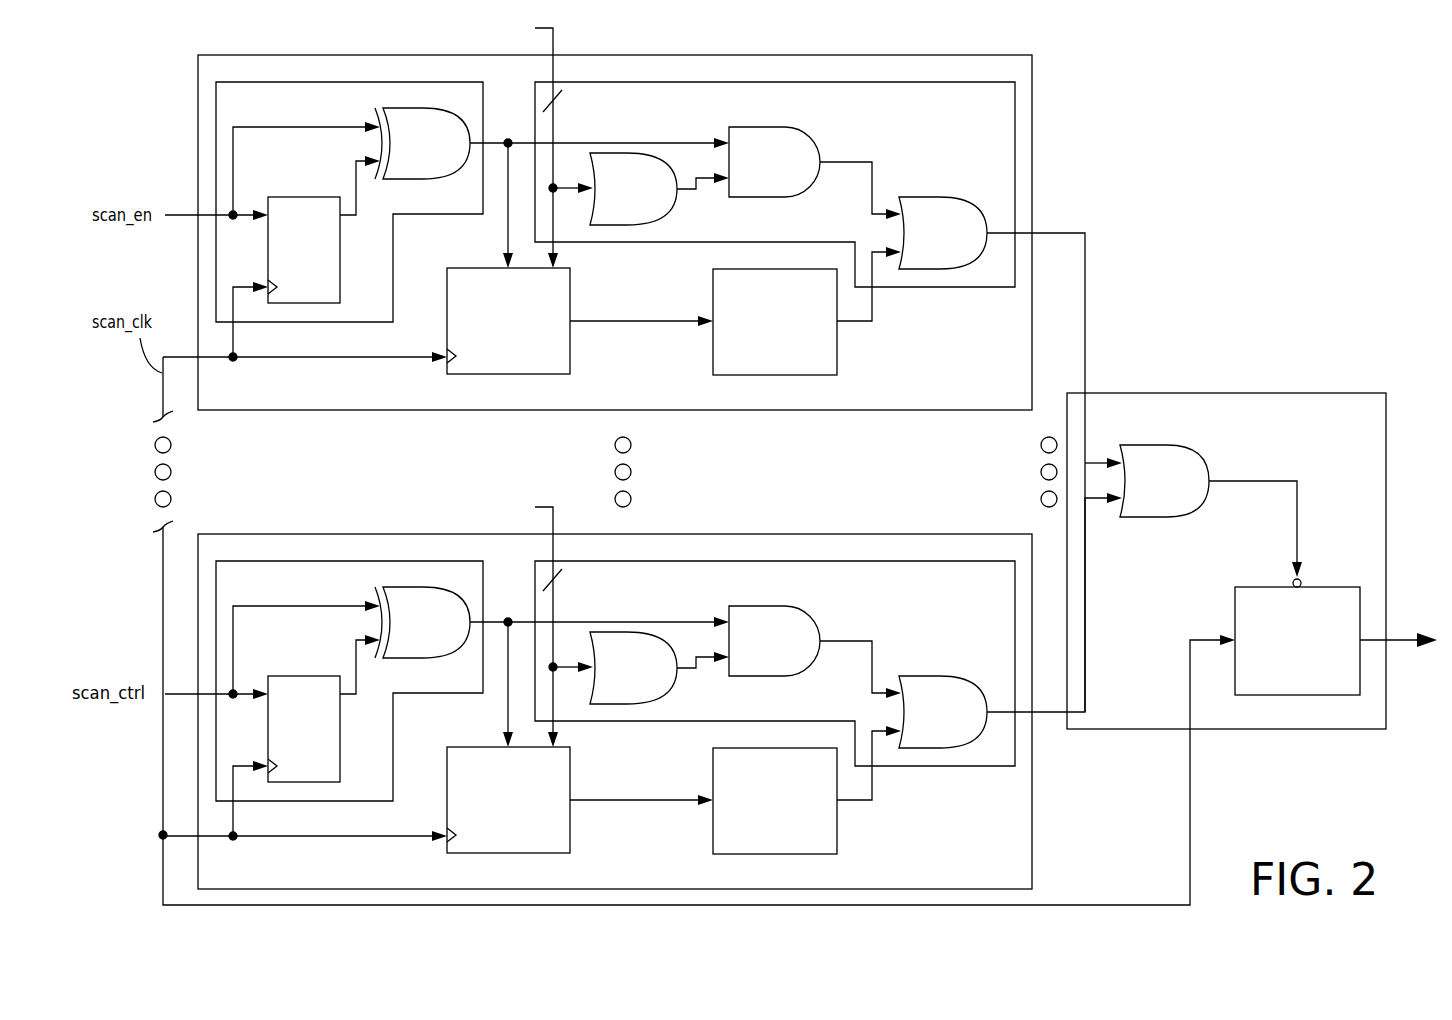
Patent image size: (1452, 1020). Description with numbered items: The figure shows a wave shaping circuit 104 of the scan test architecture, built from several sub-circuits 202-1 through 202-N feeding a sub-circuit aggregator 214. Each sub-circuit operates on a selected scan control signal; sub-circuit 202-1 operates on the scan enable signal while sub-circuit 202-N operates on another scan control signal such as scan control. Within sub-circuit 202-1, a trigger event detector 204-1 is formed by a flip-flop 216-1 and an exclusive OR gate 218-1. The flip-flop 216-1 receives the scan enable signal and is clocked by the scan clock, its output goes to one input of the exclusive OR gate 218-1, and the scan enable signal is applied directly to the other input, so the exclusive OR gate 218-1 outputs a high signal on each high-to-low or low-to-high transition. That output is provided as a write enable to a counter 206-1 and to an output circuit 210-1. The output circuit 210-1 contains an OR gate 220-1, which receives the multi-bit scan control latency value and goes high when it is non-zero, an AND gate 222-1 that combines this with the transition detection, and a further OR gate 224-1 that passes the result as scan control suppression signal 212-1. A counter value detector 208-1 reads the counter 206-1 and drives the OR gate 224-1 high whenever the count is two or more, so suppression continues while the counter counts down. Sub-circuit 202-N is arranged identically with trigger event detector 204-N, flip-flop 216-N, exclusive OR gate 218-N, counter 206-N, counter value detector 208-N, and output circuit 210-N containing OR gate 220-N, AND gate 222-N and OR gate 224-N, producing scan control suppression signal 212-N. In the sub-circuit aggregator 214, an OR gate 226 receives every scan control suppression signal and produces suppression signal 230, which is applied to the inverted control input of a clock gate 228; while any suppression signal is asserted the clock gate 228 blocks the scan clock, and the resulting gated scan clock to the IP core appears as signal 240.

The wave shaping circuit 104 is at (1155, 81).
The sub-circuit 202-1 is at (1028, 405).
The sub-circuit 202-N is at (597, 693).
The trigger event detector 204-1 is at (265, 113).
The trigger event detector 204-N is at (349, 698).
The counter 206-1 is at (528, 343).
The counter 206-N is at (508, 800).
The counter value detector 208-1 is at (795, 356).
The counter value detector 208-N is at (775, 801).
The output circuit 210-1 is at (1005, 112).
The output circuit 210-N is at (775, 680).
The scan control suppression signal 212-1 is at (1067, 233).
The scan control suppression signal 212-N is at (1048, 713).
The sub-circuit aggregator 214 is at (1323, 418).
The flip-flop 216-1 is at (325, 260).
The flip-flop 216-N is at (304, 729).
The exclusive OR gate 218-1 is at (447, 155).
The exclusive OR gate 218-N is at (422, 622).
The OR gate 220-1 is at (653, 197).
The OR gate 220-N is at (633, 668).
The AND gate 222-1 is at (795, 173).
The AND gate 222-N is at (774, 641).
The OR gate 224-1 is at (964, 244).
The OR gate 224-N is at (943, 712).
The OR gate 226 is at (1177, 491).
The clock gate 228 is at (1310, 661).
The suppression signal 230 is at (1252, 481).
The scan clock to IP core signal 240 is at (1397, 642).